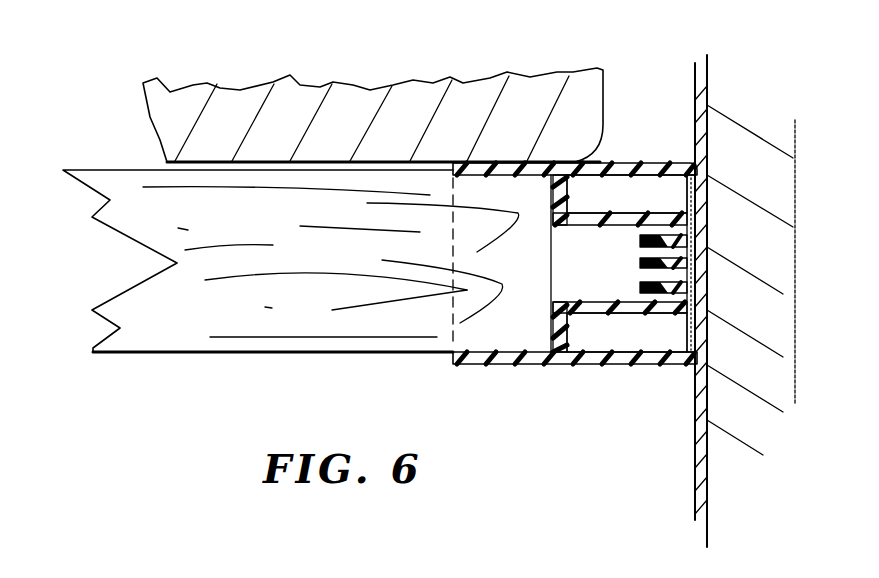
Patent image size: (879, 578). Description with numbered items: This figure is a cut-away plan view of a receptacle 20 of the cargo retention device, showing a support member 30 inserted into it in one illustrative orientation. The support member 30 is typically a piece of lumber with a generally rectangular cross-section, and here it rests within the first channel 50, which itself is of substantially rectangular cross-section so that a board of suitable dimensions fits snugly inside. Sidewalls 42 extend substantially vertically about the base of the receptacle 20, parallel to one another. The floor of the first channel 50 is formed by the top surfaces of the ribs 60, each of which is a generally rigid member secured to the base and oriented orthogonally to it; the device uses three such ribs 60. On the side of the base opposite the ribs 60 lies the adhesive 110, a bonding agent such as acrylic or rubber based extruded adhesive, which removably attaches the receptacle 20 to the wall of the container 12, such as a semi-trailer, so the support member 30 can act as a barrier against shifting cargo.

The container 12 is at (701, 101).
The receptacle 20 is at (420, 121).
The support member 30 is at (290, 320).
The sidewall 42 is at (573, 365).
The first channel 50 is at (604, 272).
The rib 60 is at (657, 237).
The adhesive 110 is at (693, 297).